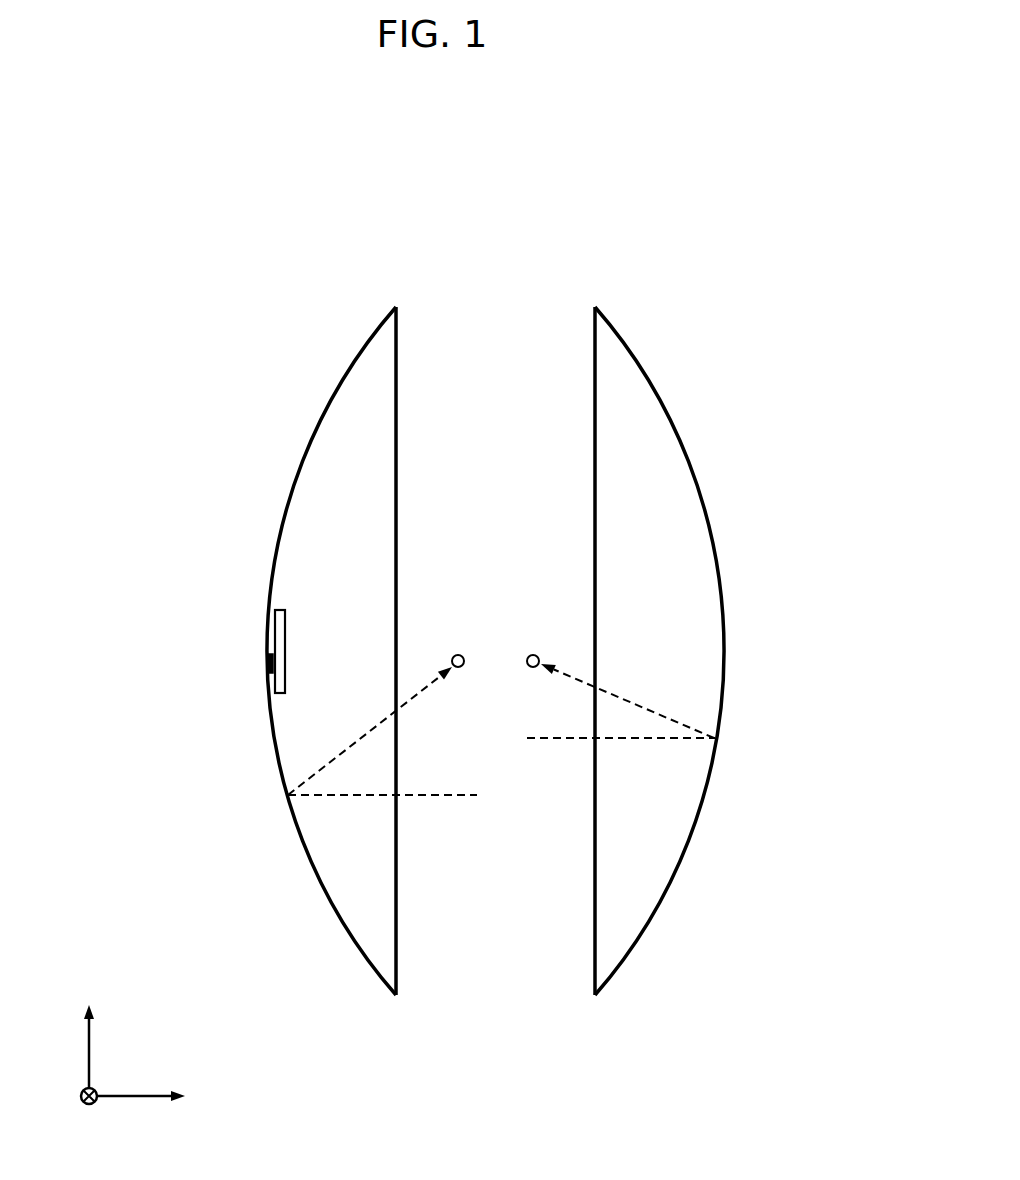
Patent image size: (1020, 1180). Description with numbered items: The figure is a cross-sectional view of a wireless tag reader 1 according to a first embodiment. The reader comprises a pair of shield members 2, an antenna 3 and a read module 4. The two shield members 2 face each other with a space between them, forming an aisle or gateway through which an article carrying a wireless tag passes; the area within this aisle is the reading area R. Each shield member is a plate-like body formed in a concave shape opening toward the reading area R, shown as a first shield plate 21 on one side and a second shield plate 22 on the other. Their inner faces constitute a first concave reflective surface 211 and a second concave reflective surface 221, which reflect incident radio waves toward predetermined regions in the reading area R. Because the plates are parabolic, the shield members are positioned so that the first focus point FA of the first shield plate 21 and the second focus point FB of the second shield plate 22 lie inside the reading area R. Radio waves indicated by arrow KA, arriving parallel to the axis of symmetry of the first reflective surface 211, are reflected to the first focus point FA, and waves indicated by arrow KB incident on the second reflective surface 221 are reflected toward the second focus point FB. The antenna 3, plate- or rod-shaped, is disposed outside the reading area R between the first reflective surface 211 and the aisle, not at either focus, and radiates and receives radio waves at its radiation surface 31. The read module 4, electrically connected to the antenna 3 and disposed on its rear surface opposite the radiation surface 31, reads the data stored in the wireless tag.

The wireless tag reader 1 is at (733, 314).
The pair of shield members 2 is at (645, 1057).
The first shield plate 21 is at (370, 968).
The second shield plate 22 is at (620, 968).
The first concave reflective surface 211 is at (346, 453).
The second concave reflective surface 221 is at (653, 453).
The antenna 3 is at (280, 650).
The radiation surface 31 is at (285, 630).
The read module 4 is at (270, 667).
The reading area R is at (493, 312).
The first focus point FA is at (458, 654).
The second focus point FB is at (533, 654).
The arrow indicating radio waves KA is at (345, 796).
The arrow indicating radio waves KB is at (655, 712).